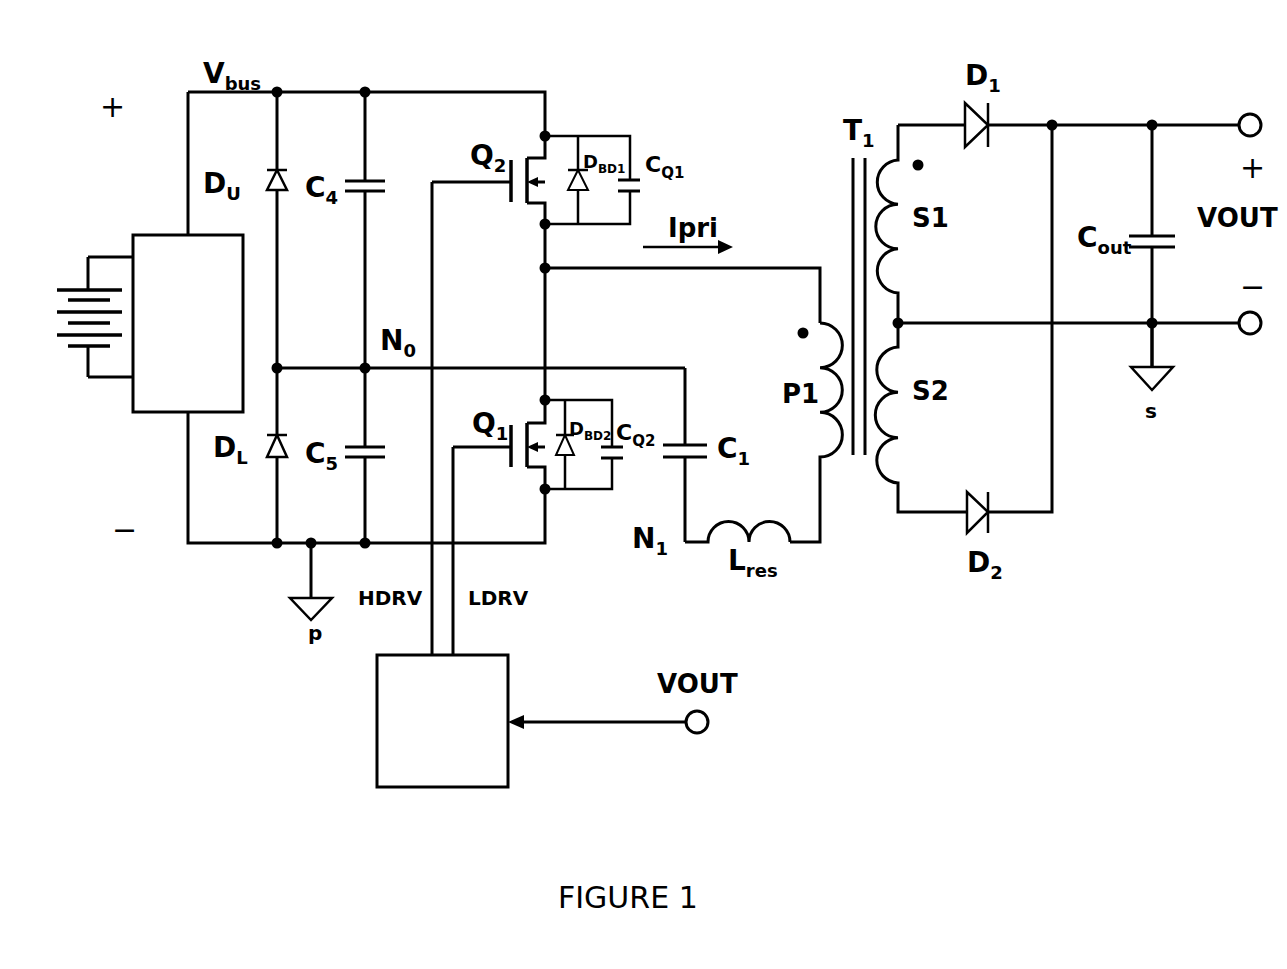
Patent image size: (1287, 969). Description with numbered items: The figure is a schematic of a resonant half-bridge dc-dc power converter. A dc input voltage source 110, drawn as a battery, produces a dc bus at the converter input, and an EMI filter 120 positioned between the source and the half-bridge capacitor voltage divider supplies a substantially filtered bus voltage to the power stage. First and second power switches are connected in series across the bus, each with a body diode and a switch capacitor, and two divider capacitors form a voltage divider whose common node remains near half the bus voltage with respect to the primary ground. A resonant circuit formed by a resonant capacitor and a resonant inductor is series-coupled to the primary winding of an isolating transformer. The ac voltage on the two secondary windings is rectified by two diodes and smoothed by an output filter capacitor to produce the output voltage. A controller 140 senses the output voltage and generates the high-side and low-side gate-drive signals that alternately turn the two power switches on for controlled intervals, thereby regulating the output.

The dc input voltage source 110 is at (74, 317).
The electromagnetic interference (EMI) filter 120 is at (188, 323).
The controller 140 is at (442, 721).